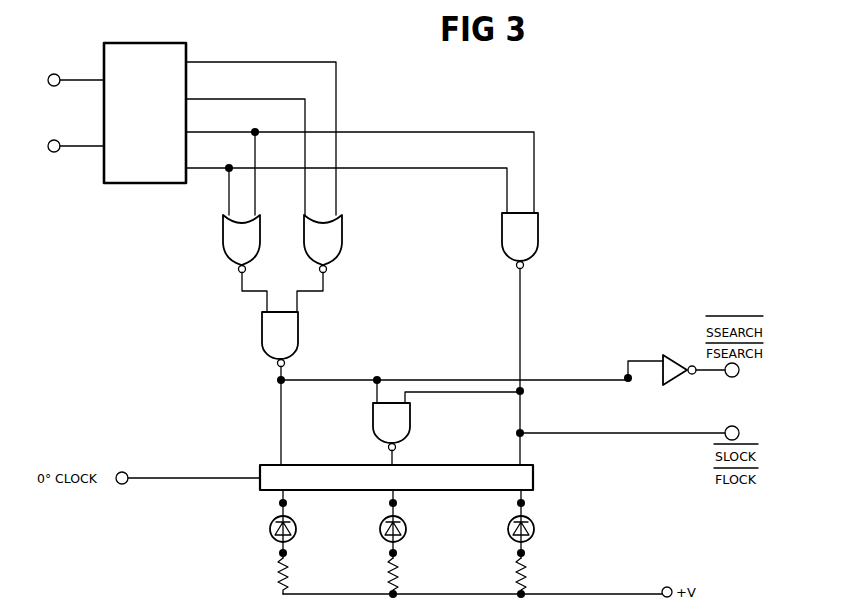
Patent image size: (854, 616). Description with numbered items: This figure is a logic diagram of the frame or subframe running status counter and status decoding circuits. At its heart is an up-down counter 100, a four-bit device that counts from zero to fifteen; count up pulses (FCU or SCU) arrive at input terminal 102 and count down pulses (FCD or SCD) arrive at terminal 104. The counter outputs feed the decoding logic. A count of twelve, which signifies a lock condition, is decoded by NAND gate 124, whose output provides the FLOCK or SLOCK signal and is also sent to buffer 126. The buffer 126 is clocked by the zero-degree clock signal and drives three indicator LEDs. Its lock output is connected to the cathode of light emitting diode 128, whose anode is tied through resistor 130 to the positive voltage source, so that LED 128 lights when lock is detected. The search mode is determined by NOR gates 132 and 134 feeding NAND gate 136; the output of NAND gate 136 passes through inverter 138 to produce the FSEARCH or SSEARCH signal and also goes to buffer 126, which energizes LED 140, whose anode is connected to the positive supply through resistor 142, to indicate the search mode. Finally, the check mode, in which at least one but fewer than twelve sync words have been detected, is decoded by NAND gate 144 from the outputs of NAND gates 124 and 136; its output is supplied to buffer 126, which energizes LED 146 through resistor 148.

The up-down counter 100 is at (176, 48).
The input terminal 102 is at (59, 85).
The terminal 104 is at (59, 141).
The NAND gate 124 is at (539, 243).
The buffer 126 is at (308, 463).
The light emitting diode 128 is at (535, 530).
The resistor 130 is at (529, 567).
The NOR gate 132 is at (222, 243).
The NOR gate 134 is at (343, 243).
The NAND gate 136 is at (298, 346).
The inverter 138 is at (670, 357).
The LED 140 is at (297, 530).
The resistor 142 is at (291, 572).
The NAND gate 144 is at (398, 431).
The LED 146 is at (407, 530).
The resistor 148 is at (401, 572).